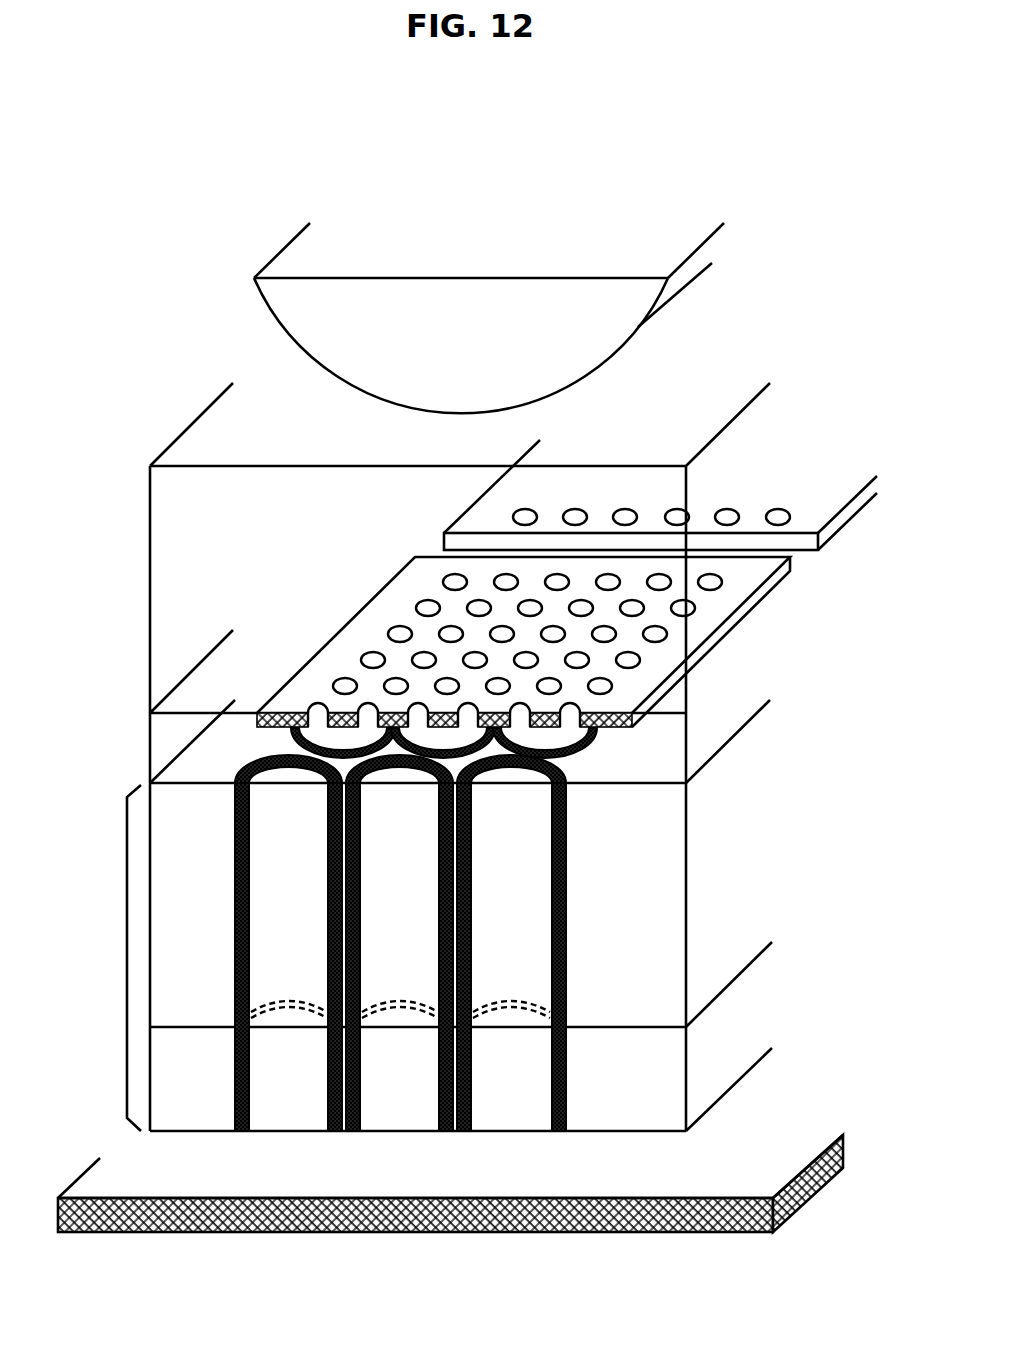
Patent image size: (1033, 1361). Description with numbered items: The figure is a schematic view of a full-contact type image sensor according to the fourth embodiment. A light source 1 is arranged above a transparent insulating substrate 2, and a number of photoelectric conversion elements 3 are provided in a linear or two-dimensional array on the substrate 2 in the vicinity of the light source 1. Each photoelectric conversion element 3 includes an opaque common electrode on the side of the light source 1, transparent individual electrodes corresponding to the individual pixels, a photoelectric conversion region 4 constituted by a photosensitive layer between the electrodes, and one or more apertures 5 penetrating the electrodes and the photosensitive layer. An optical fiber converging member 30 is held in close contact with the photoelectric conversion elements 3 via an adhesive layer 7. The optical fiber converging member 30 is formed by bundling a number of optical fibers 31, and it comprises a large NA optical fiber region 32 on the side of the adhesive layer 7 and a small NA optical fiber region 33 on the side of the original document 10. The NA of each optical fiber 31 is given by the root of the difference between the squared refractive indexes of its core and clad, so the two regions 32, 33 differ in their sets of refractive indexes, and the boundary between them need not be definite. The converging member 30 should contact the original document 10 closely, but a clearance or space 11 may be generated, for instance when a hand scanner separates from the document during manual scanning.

The light source 1 is at (302, 260).
The transparent insulating substrate 2 is at (180, 612).
The photoelectric conversion element 3 is at (316, 633).
The photoelectric conversion region 4 is at (423, 588).
The aperture 5 is at (396, 630).
The adhesive layer 7 is at (745, 680).
The original document 10 is at (99, 1183).
The clearance or space 11 is at (632, 1172).
The optical fiber converging member 30 is at (118, 898).
The optical fiber 31 is at (538, 897).
The large NA optical fiber region 32 is at (744, 850).
The small NA optical fiber region 33 is at (745, 1025).